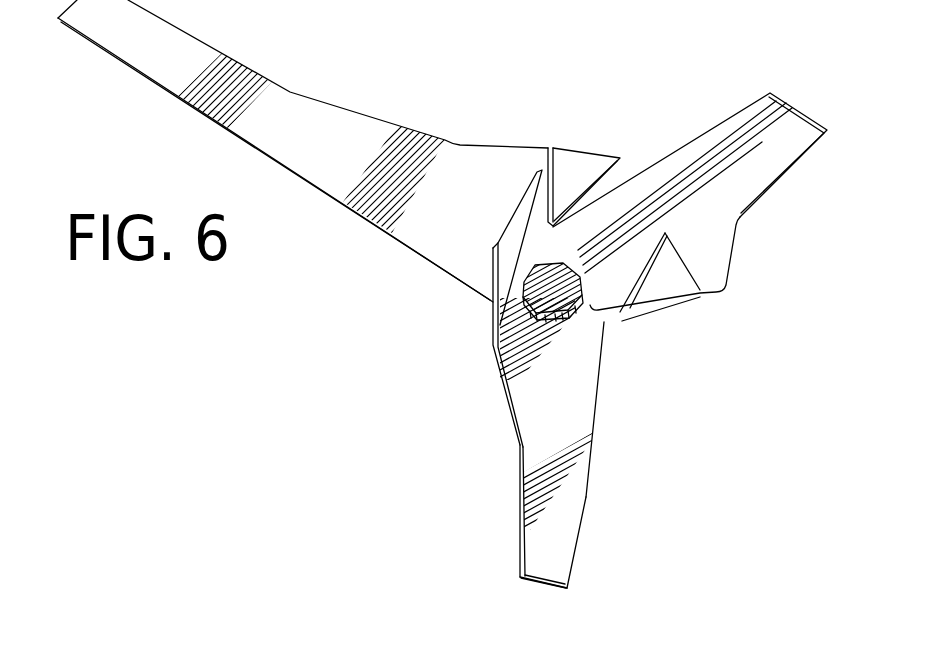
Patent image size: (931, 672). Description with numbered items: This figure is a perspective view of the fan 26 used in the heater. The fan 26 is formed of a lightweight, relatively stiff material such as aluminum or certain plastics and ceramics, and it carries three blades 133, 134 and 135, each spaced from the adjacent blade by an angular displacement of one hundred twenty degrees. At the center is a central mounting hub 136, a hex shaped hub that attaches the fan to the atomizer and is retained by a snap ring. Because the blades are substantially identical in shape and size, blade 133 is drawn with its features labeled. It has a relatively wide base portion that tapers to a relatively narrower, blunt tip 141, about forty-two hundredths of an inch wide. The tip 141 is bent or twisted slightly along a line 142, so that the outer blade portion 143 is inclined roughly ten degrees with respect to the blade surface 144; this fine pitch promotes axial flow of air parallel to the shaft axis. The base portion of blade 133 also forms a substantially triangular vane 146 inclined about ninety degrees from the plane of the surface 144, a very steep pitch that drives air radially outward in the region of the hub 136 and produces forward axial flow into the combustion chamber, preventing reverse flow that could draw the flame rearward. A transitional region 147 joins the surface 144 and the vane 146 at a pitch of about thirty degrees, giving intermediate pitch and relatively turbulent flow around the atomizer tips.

The fan 26 is at (734, 142).
The blade 133 is at (557, 573).
The blade 134 is at (163, 60).
The blade 135 is at (755, 173).
The central mounting hub 136 is at (575, 298).
The blunt tip 141 is at (538, 584).
The bend line 142 is at (565, 515).
The outer blade portion 143 is at (538, 554).
The blade surface 144 is at (568, 465).
The triangular vane 146 is at (525, 218).
The transitional region 147 is at (525, 372).